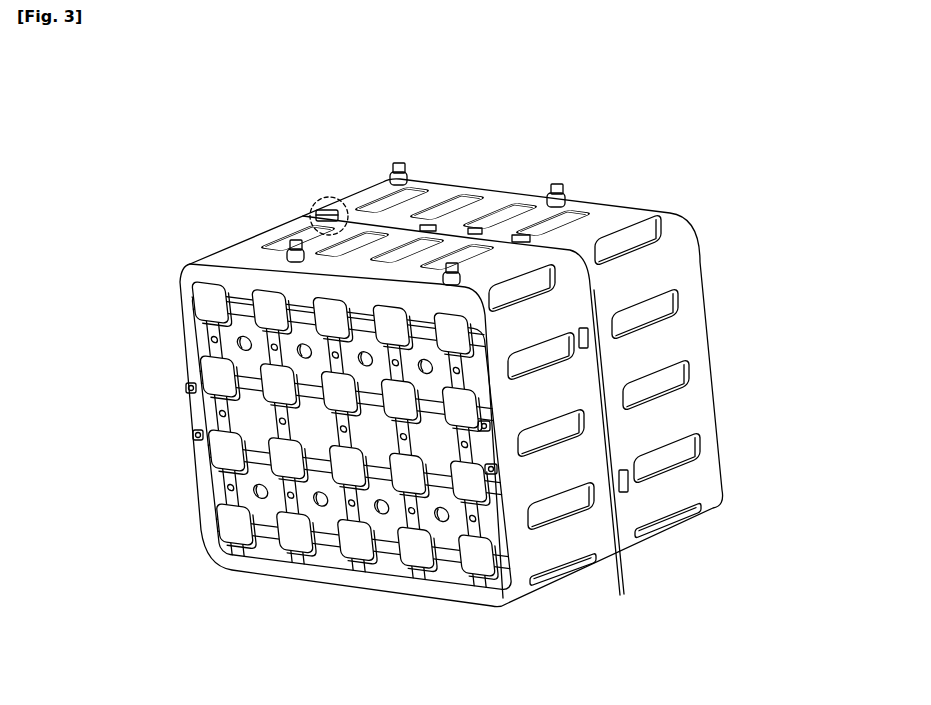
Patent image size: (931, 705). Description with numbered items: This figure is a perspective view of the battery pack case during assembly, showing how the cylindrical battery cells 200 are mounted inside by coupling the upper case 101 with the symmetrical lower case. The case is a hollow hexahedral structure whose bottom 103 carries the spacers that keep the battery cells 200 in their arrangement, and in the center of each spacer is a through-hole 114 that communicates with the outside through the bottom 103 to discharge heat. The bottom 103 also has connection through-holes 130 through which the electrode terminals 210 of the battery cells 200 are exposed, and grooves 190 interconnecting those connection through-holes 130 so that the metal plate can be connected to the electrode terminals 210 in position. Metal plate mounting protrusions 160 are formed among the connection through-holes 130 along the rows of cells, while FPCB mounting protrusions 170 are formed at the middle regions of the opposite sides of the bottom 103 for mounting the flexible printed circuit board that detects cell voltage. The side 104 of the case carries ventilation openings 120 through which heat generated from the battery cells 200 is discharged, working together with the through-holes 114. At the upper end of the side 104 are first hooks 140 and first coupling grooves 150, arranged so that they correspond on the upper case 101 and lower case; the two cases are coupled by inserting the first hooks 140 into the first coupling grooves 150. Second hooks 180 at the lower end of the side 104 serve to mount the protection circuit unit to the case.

The upper case 101 is at (425, 128).
The bottom 103 is at (190, 340).
The side 104 is at (640, 512).
The through-hole 114 is at (237, 550).
The ventilation opening 120 is at (150, 522).
The connection through-hole 130 is at (190, 300).
The first hook 140 is at (288, 163).
The first coupling groove 150 is at (327, 198).
The metal plate mounting protrusion 160 is at (350, 508).
The FPCB mounting protrusion 170 is at (180, 388).
The second hook 180 is at (565, 190).
The groove 190 is at (393, 550).
The battery cell 200 is at (453, 203).
The electrode terminal 210 is at (207, 293).